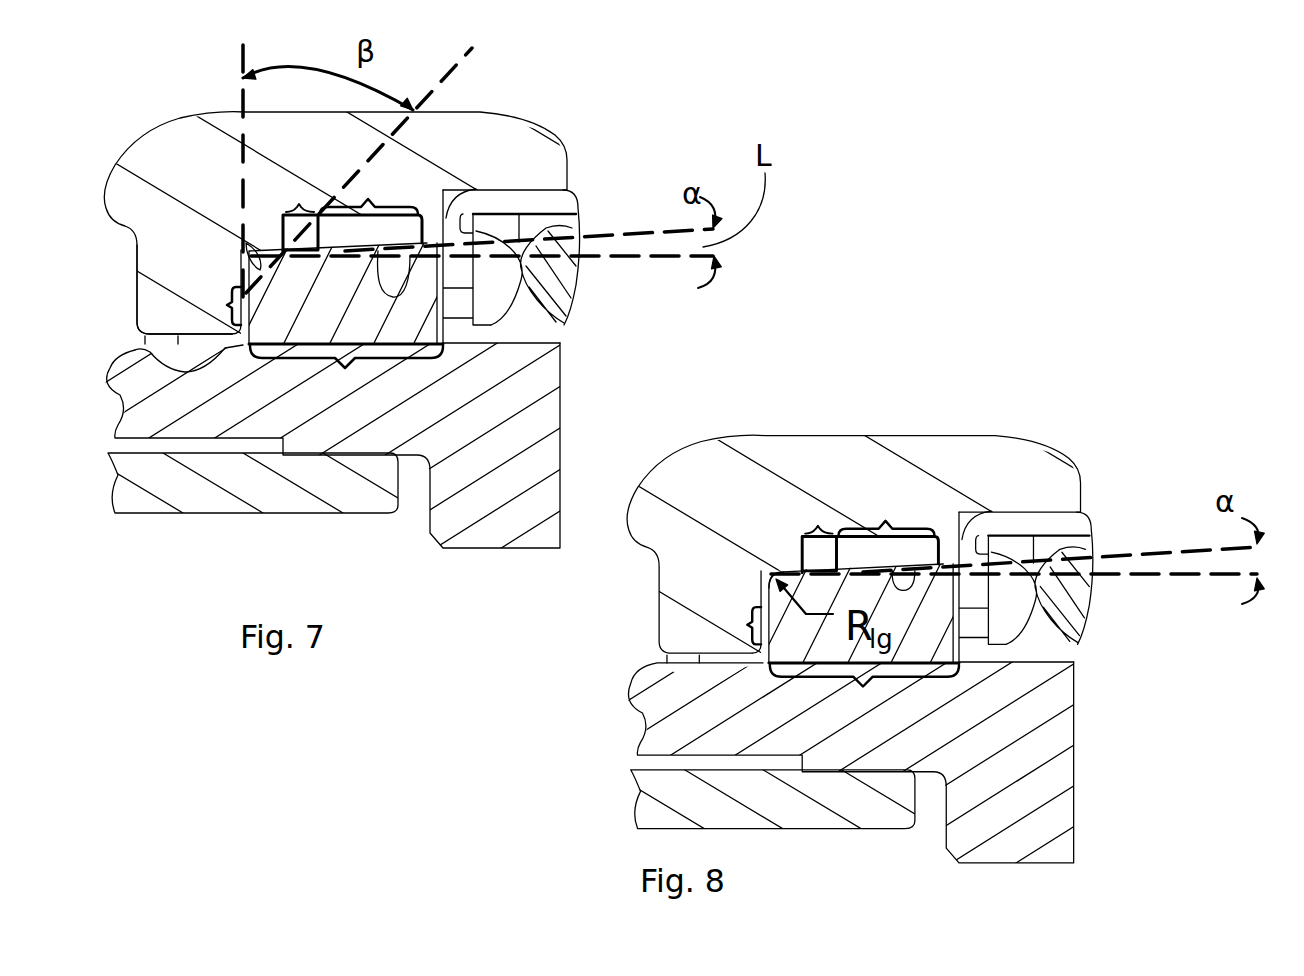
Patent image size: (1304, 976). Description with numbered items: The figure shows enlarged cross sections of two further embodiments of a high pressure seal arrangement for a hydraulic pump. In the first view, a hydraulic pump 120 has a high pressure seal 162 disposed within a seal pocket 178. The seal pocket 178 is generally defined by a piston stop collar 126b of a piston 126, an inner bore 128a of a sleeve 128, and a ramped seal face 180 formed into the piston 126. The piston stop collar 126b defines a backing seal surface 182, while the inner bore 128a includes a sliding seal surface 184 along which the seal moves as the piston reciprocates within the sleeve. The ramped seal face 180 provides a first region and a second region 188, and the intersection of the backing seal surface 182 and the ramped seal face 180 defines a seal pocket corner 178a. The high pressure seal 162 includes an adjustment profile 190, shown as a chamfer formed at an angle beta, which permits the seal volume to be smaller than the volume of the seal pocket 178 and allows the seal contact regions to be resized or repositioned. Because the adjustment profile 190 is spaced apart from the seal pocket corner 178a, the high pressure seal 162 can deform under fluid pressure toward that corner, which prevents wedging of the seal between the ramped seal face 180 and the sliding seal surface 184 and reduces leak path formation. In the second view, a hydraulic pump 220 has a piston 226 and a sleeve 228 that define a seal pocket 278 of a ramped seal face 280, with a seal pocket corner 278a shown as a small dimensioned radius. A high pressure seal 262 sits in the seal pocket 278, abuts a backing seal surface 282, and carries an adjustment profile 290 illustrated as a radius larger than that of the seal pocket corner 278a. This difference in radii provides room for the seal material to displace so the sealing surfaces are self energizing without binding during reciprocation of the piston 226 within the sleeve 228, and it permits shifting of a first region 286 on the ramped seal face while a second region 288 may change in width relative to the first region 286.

In FIG. 7, the hydraulic pump 120 is at (205, 105).
In FIG. 7, the piston 126 is at (512, 152).
In FIG. 7, the piston stop collar 126b is at (148, 277).
In FIG. 7, the sleeve 128 is at (533, 428).
In FIG. 7, the inner bore 128a is at (549, 342).
In FIG. 7, the high pressure seal 162 is at (172, 368).
In FIG. 7, the seal pocket 178 is at (232, 243).
In FIG. 7, the seal pocket corner 178a is at (256, 260).
In FIG. 7, the ramped seal face 180 is at (395, 300).
In FIG. 7, the backing seal surface 182 is at (297, 212).
In FIG. 7, the sliding seal surface 184 is at (345, 369).
In FIG. 7, the second region 188 is at (368, 200).
In FIG. 7, the adjustment profile 190 is at (248, 282).
In FIG. 8, the hydraulic pump 220 is at (1023, 418).
In FIG. 8, the piston 226 is at (907, 445).
In FIG. 8, the sleeve 228 is at (1030, 755).
In FIG. 8, the high pressure seal 262 is at (935, 656).
In FIG. 8, the seal pocket 278 is at (727, 559).
In FIG. 8, the seal pocket corner 278a is at (775, 574).
In FIG. 8, the ramped seal face 280 is at (915, 578).
In FIG. 8, the backing seal surface 282 is at (745, 626).
In FIG. 8, the first region 286 is at (817, 527).
In FIG. 8, the second region 288 is at (887, 516).
In FIG. 8, the adjustment profile 290 is at (768, 594).